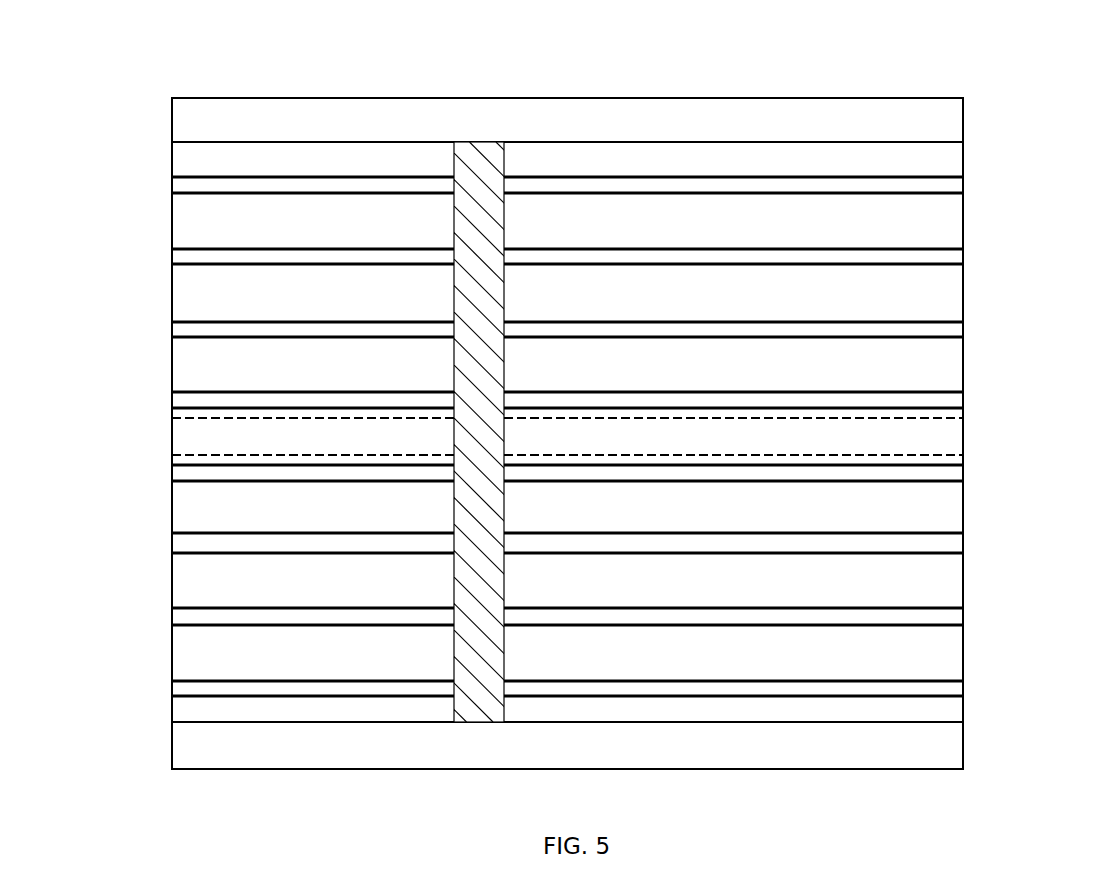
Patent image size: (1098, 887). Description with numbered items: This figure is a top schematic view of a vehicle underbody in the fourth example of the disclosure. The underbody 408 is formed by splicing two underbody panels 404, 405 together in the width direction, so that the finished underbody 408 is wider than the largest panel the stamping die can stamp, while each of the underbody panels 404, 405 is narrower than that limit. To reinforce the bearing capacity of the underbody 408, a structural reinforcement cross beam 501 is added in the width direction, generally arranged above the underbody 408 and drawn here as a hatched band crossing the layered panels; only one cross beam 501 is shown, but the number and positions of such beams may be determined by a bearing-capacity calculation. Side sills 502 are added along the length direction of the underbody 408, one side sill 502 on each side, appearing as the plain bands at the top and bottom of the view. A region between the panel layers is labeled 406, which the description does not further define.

The structural reinforcement cross beam 501 is at (497, 168).
The side sill 502 is at (669, 117).
The underbody 408 is at (171, 250).
The underbody panel 404 is at (948, 272).
The hatched layer 406 is at (942, 441).
The underbody panel 405 is at (952, 608).